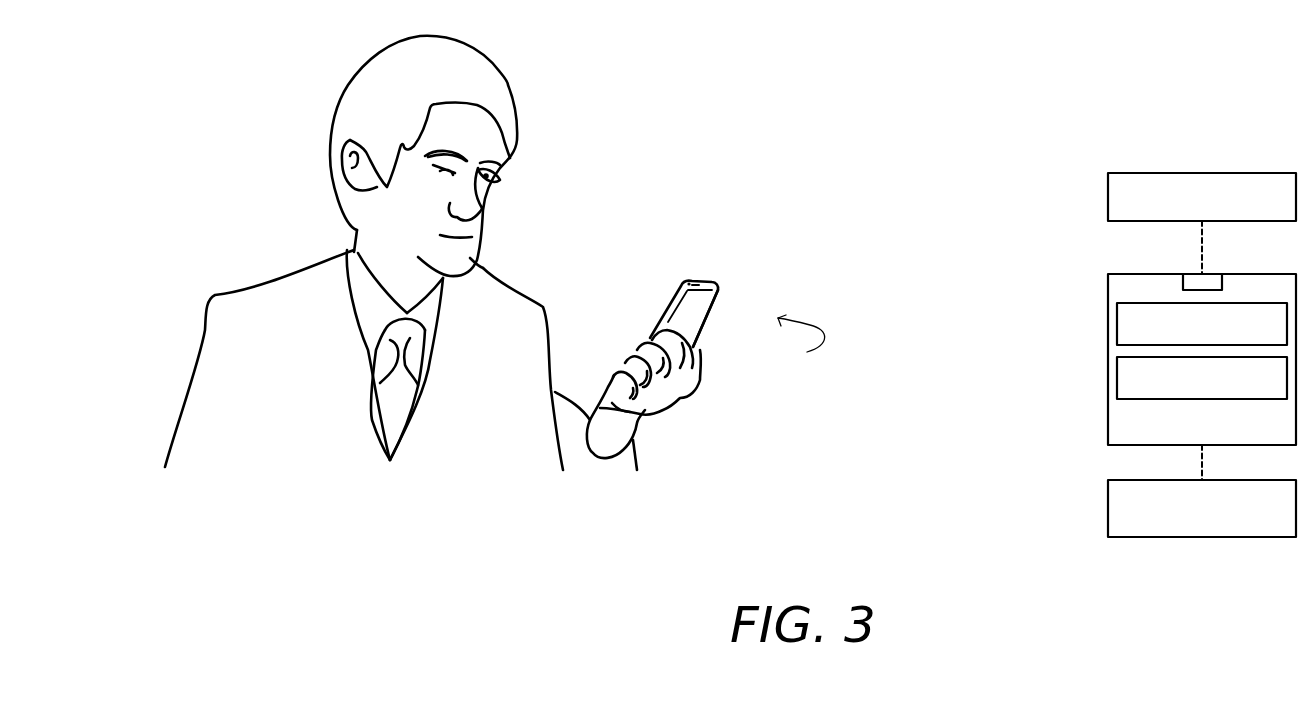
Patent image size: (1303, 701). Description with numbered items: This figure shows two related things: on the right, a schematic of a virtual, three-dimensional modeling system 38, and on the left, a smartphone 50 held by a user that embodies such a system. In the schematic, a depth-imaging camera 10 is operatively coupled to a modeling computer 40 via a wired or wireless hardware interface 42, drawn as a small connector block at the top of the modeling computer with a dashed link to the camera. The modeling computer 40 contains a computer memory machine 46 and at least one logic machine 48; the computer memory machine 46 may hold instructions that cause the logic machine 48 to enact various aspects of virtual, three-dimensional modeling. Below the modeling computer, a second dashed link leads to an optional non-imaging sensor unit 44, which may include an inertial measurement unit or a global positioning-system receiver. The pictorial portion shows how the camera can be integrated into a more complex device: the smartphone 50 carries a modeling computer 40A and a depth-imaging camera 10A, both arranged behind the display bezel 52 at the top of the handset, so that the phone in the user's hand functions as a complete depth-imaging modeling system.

The depth-imaging camera 10 is at (1212, 208).
The depth-imaging camera 10A is at (688, 279).
The virtual, three-dimensional modeling system 38 is at (1025, 225).
The modeling computer 40 is at (1212, 430).
The modeling computer 40A is at (695, 320).
The hardware interface 42 is at (1219, 275).
The non-imaging sensor unit 44 is at (1212, 518).
The computer memory machine 46 is at (1212, 334).
The logic machine 48 is at (1212, 388).
The smartphone 50 is at (801, 339).
The display bezel 52 is at (658, 316).